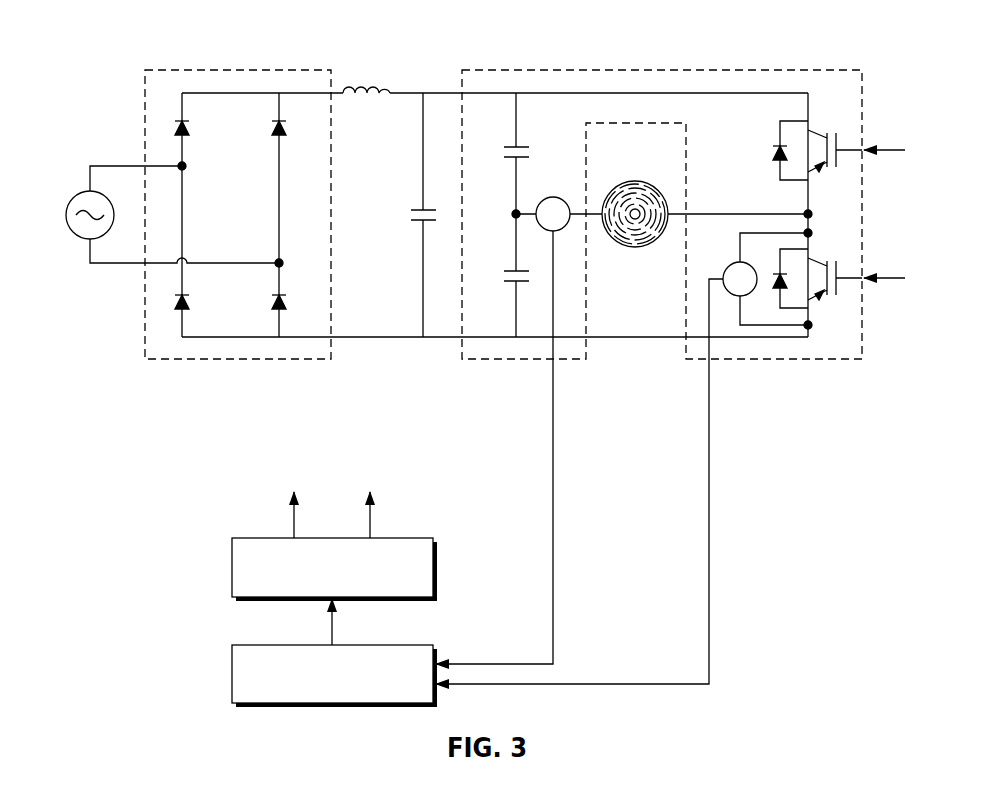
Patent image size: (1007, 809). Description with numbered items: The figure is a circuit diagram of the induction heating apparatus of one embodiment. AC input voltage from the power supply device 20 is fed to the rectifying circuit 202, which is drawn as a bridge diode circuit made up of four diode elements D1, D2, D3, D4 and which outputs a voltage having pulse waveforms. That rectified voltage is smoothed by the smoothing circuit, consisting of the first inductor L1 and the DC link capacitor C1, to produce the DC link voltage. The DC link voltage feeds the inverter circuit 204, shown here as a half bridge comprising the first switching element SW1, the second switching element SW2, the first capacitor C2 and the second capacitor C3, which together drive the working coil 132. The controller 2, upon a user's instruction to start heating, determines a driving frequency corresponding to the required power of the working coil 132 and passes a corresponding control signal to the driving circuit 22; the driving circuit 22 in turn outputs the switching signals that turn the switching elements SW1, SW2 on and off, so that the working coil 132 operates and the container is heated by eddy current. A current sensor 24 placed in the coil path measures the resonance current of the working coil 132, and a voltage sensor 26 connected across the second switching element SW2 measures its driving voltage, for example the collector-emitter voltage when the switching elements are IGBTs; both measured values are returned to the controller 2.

The controller 2 is at (232, 674).
The power supply device 20 is at (72, 187).
The driving circuit 22 is at (232, 568).
The current sensor 24 is at (553, 194).
The voltage sensor 26 is at (728, 265).
The working coil 132 is at (635, 181).
The rectifying circuit 202 is at (238, 190).
The inverter circuit 204 is at (733, 70).
The first inductor L1 is at (366, 75).
The DC link capacitor C1 is at (407, 215).
The first capacitor C2 is at (499, 153).
The second capacitor C3 is at (499, 275).
The diode element D1 is at (200, 128).
The diode element D2 is at (200, 302).
The diode element D3 is at (297, 128).
The diode element D4 is at (297, 302).
The first switching element SW1 is at (817, 133).
The second switching element SW2 is at (817, 261).